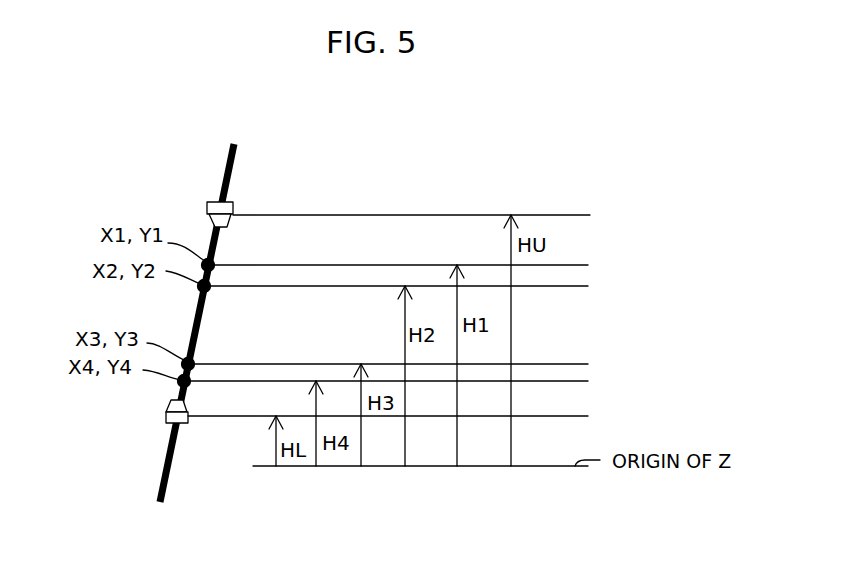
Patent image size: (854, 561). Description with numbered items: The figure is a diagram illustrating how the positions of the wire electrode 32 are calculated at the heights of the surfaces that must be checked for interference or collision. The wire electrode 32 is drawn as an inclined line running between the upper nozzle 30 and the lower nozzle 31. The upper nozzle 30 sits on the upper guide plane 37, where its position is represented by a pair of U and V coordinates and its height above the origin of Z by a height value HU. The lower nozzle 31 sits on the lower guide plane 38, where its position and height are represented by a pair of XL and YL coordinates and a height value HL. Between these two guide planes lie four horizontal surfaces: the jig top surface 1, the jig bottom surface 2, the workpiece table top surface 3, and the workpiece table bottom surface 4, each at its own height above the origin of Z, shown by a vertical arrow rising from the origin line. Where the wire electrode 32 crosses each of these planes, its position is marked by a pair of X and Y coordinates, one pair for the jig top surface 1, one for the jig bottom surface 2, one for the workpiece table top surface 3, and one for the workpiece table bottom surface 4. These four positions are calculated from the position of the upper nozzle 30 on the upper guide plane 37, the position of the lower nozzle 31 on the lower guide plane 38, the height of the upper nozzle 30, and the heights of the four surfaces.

The wire electrode 32 is at (228, 172).
The upper nozzle 30 is at (232, 208).
The lower nozzle 31 is at (186, 424).
The upper guide plane 37 is at (575, 215).
The jig top surface 1 is at (575, 265).
The jig bottom surface 2 is at (575, 286).
The workpiece table top surface 3 is at (575, 364).
The workpiece table bottom surface 4 is at (575, 381).
The lower guide plane 38 is at (575, 416).